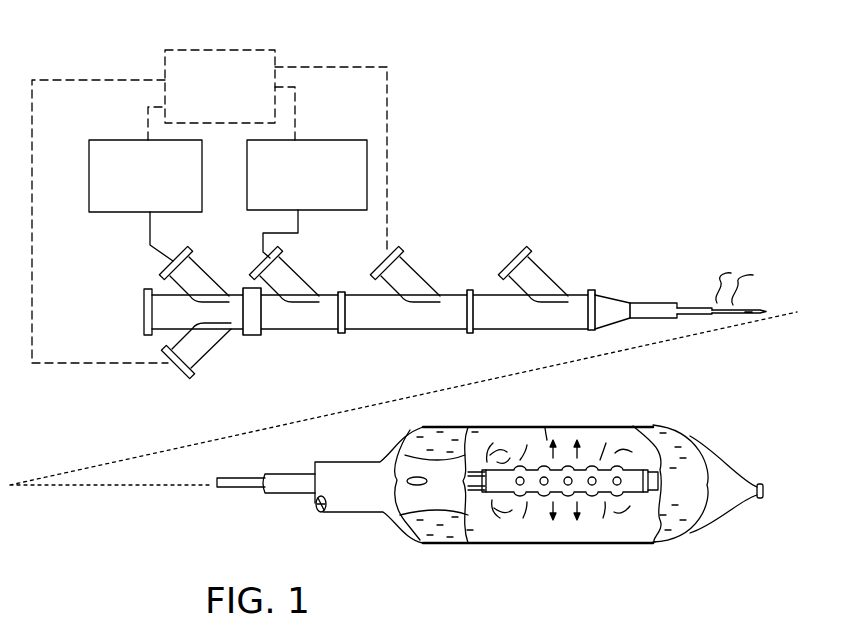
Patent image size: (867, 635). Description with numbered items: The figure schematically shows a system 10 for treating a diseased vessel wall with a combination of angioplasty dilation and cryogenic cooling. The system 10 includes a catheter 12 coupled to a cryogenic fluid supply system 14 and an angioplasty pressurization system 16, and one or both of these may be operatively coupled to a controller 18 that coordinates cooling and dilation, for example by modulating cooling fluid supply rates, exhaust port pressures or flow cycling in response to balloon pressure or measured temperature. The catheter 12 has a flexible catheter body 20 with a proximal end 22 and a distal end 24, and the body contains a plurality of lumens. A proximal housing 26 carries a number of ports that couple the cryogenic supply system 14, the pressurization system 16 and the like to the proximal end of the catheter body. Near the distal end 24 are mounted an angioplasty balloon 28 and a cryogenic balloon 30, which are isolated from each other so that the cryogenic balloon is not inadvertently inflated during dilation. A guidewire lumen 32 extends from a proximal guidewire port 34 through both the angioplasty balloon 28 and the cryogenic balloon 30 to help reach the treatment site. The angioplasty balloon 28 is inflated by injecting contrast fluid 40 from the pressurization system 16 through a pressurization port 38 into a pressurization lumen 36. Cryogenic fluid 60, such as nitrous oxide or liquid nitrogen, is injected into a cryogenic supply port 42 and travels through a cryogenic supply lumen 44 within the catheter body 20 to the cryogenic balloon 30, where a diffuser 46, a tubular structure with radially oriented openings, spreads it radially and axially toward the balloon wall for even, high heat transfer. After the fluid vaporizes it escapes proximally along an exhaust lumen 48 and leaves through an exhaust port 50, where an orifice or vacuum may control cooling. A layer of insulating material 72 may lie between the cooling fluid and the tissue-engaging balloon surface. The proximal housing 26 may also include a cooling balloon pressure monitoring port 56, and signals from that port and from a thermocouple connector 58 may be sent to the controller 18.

The system 10 is at (620, 130).
The catheter 12 is at (615, 281).
The cryogenic fluid supply system 14 is at (120, 212).
The angioplasty pressurization system 16 is at (365, 211).
The controller 18 is at (202, 50).
The catheter body 20 is at (648, 302).
The proximal end 22 is at (632, 319).
The distal end 24 is at (382, 460).
The proximal housing 26 is at (285, 322).
The angioplasty balloon 28 is at (700, 443).
The cryogenic balloon 30 is at (657, 443).
The guidewire lumen 32 is at (762, 490).
The proximal guidewire port 34 is at (144, 315).
The pressurization lumen 36 is at (768, 311).
The pressurization port 38 is at (295, 282).
The contrast fluid 40 is at (405, 527).
The cryogenic supply port 42 is at (198, 272).
The cryogenic supply lumen 44 is at (753, 313).
The diffuser 46 is at (657, 494).
The exhaust lumen 48 is at (317, 510).
The exhaust port 50 is at (530, 265).
The cooling balloon pressure monitoring port 56 is at (408, 273).
The thermocouple connector 58 is at (200, 352).
The cryogenic fluid 60 is at (543, 437).
The layer of insulating material 72 is at (590, 543).